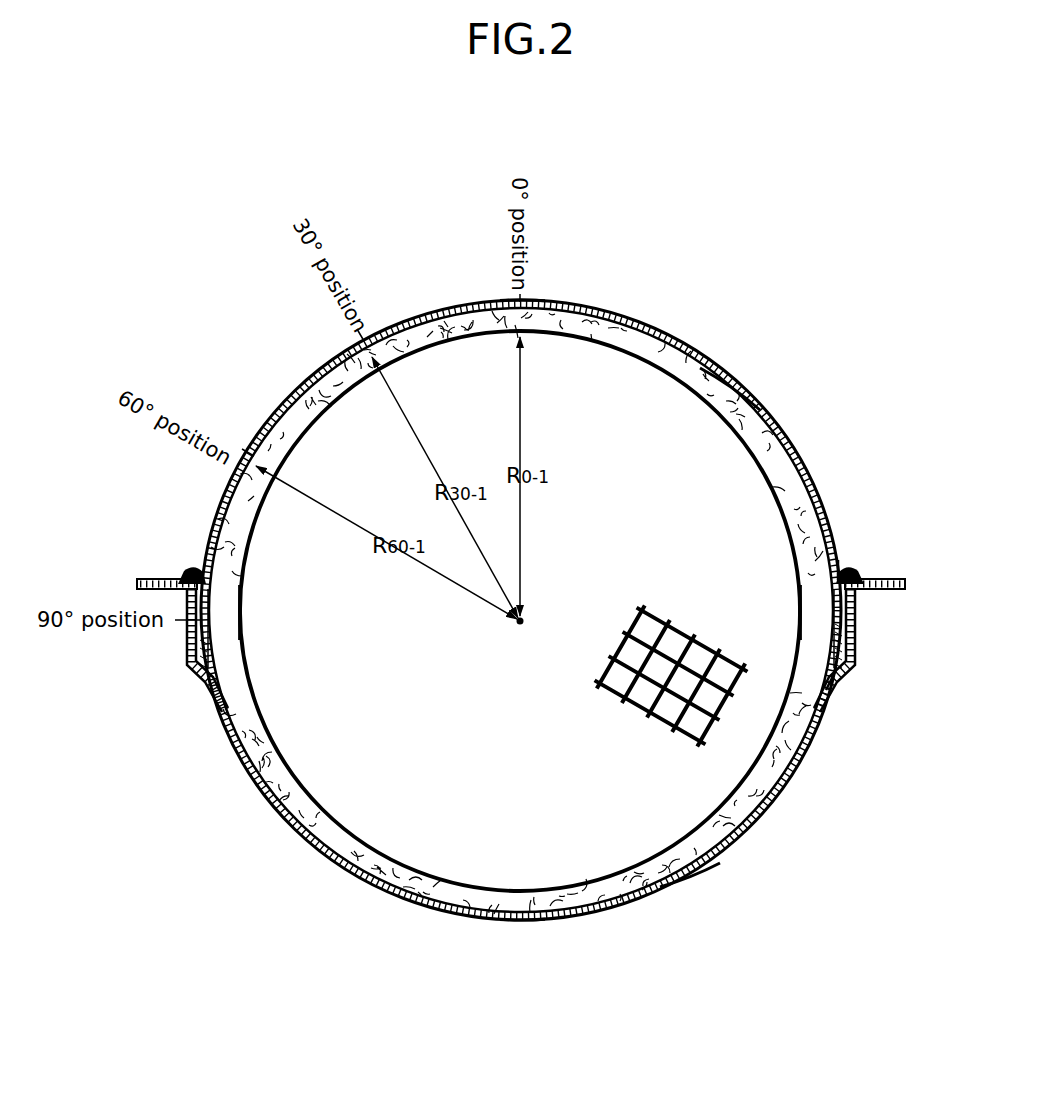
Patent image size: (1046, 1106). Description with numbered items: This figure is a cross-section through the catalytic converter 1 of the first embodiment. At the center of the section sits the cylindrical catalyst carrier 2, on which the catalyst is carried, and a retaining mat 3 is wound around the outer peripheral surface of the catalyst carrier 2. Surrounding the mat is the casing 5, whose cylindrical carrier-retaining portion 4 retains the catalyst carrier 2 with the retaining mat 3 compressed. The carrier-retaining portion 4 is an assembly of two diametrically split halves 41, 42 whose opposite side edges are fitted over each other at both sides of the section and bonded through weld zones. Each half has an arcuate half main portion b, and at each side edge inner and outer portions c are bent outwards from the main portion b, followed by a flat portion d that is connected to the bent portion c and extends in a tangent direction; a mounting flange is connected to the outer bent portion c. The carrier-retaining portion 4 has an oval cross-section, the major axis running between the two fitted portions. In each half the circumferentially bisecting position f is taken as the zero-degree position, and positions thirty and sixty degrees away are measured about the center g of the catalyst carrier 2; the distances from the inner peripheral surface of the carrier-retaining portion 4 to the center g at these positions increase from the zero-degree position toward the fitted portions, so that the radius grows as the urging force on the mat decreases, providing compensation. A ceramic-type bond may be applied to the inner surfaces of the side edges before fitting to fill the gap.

The catalytic converter 1 is at (724, 352).
The catalyst carrier 2 is at (627, 559).
The retaining mat 3 is at (740, 815).
The cylindrical carrier-retaining portion 4 is at (789, 434).
The half 41 is at (660, 332).
The half 42 is at (610, 906).
The casing 5 is at (817, 472).
The arcuate half main portion b is at (749, 396).
The bent portion c is at (840, 571).
The flat portion d is at (837, 630).
The circumferentially bisecting position f is at (527, 304).
The center g is at (520, 624).